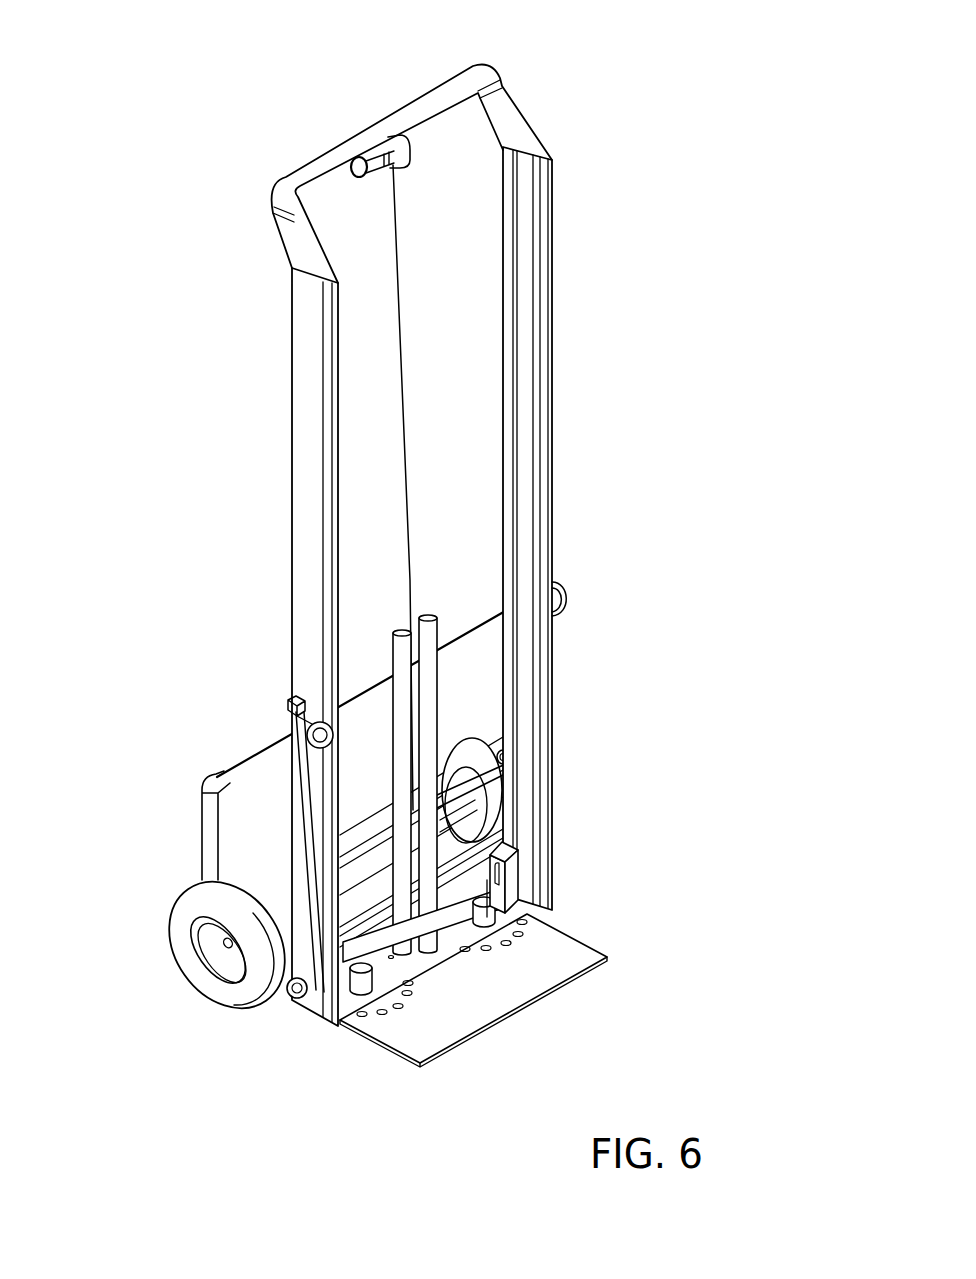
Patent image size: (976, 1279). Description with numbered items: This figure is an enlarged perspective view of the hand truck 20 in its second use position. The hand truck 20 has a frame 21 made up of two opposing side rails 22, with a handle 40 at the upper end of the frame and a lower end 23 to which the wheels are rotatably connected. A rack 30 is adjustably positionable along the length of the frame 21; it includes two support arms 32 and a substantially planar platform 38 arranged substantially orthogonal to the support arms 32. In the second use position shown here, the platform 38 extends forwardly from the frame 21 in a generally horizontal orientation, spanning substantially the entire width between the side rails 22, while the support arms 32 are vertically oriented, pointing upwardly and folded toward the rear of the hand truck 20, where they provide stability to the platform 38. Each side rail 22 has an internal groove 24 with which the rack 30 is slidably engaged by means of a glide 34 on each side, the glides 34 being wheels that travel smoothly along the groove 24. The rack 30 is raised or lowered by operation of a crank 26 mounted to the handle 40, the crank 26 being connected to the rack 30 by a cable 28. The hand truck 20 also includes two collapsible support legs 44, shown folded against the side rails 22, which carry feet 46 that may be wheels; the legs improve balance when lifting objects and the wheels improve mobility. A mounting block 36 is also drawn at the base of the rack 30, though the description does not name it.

The hand truck 20 is at (142, 106).
The frame 21 is at (426, 521).
The side rails 22 is at (550, 425).
The lower end 23 is at (320, 1020).
The internal groove 24 is at (523, 450).
The crank 26 is at (398, 173).
The cable 28 is at (395, 373).
The rack 30 is at (509, 916).
The support arms 32 is at (393, 632).
The glide 34 is at (522, 732).
The mounting block 36 is at (515, 880).
The platform 38 is at (540, 978).
The handle 40 is at (432, 73).
The support legs 44 is at (293, 845).
The feet 46 is at (333, 740).